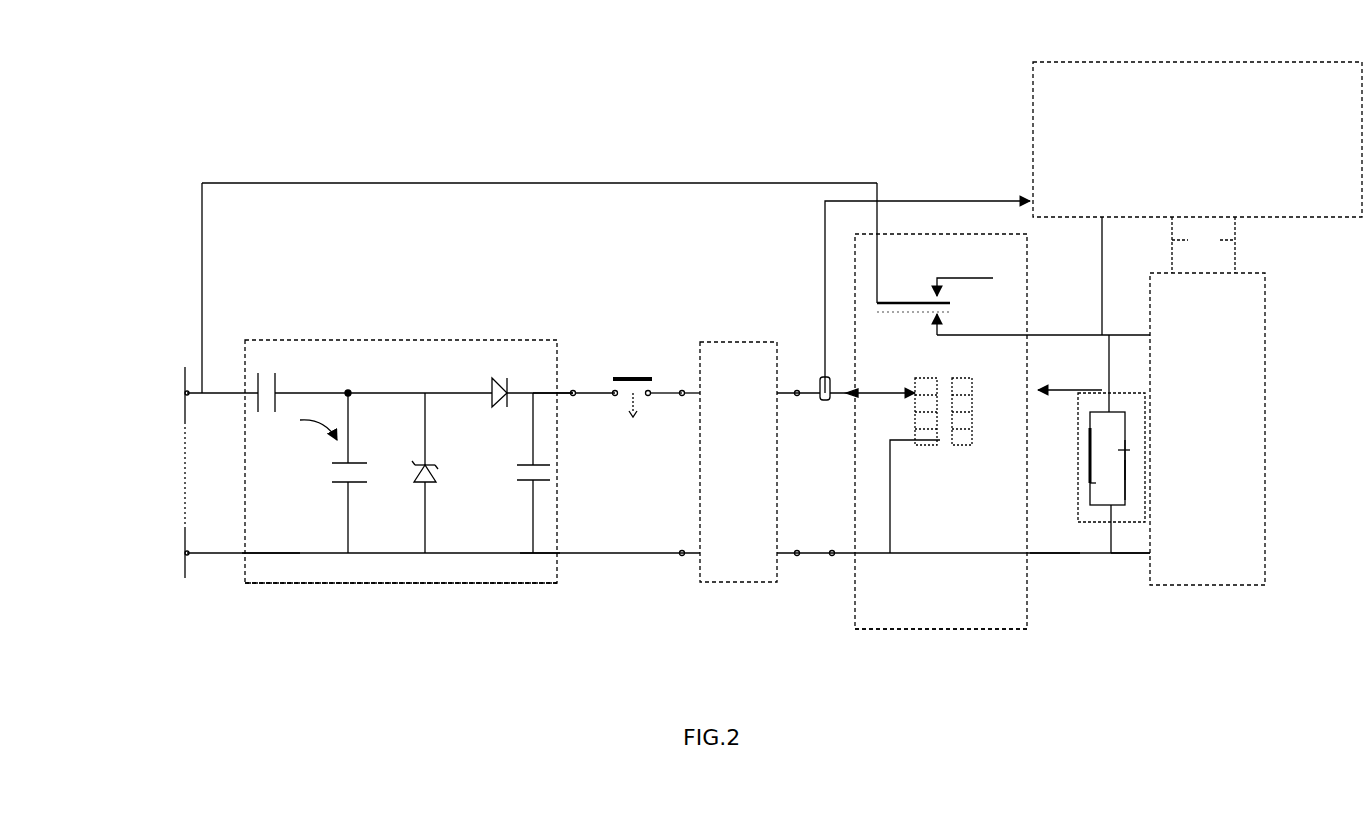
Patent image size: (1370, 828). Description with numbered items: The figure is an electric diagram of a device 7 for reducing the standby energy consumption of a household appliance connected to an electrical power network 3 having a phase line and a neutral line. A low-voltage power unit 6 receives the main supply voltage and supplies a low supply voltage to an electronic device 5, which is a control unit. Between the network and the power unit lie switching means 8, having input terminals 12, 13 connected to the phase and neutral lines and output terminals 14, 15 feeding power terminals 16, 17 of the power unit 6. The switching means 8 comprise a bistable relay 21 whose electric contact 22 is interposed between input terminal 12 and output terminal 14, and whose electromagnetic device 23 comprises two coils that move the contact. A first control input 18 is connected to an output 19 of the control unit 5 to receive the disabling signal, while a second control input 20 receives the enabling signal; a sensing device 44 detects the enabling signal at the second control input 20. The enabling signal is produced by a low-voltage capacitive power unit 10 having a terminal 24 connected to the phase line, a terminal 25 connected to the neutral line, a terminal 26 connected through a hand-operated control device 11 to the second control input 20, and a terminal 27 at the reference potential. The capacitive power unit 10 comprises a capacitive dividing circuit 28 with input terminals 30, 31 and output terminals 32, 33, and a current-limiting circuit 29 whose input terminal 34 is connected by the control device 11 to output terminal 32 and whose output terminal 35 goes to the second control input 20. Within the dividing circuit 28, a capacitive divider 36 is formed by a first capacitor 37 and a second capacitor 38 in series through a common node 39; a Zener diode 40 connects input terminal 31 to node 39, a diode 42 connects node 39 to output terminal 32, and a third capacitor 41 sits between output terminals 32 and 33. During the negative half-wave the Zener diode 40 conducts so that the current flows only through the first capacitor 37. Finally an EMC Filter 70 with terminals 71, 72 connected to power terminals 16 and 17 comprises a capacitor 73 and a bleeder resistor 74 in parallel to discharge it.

The electrical power network 3 is at (138, 464).
The electronic device 5 is at (1197, 139).
The low-voltage power unit 6 is at (1207, 429).
The device for reducing the standby energy consumption 7 is at (544, 158).
The switching means 8 is at (913, 234).
The low-voltage capacitive power unit 10 is at (497, 628).
The hand-operated control device 11 is at (626, 358).
The input terminal 12 is at (880, 192).
The input terminal 13 is at (832, 554).
The output terminal 14 is at (1045, 335).
The output terminal 15 is at (1048, 553).
The power terminal 16 is at (1143, 335).
The power terminal 17 is at (1139, 554).
The first control input 18 is at (1062, 393).
The output 19 is at (1102, 259).
The second control input 20 is at (848, 396).
The bistable relay 21 is at (965, 640).
The electric contact 22 is at (952, 266).
The electromagnetic device 23 is at (945, 452).
The terminal 24 is at (207, 393).
The terminal 25 is at (208, 553).
The terminal 26 is at (575, 392).
The terminal 27 is at (570, 554).
The capacitive dividing circuit 28 is at (398, 583).
The current-limiting circuit 29 is at (738, 462).
The input terminal 30 is at (236, 393).
The input terminal 31 is at (243, 553).
The output terminal 32 is at (540, 392).
The output terminal 33 is at (540, 554).
The input terminal 34 is at (682, 392).
The output terminal 35 is at (797, 392).
The capacitive divider 36 is at (320, 376).
The first capacitor 37 is at (270, 366).
The second capacitor 38 is at (330, 480).
The common node 39 is at (349, 392).
The Zener diode 40 is at (430, 477).
The third capacitor 41 is at (550, 478).
The diode 42 is at (496, 384).
The sensing device 44 is at (822, 398).
The EMC Filter 70 is at (1115, 390).
The terminal 71 is at (1109, 346).
The terminal 72 is at (1111, 562).
The capacitor 73 is at (1123, 462).
The bleeder resistor 74 is at (1090, 456).